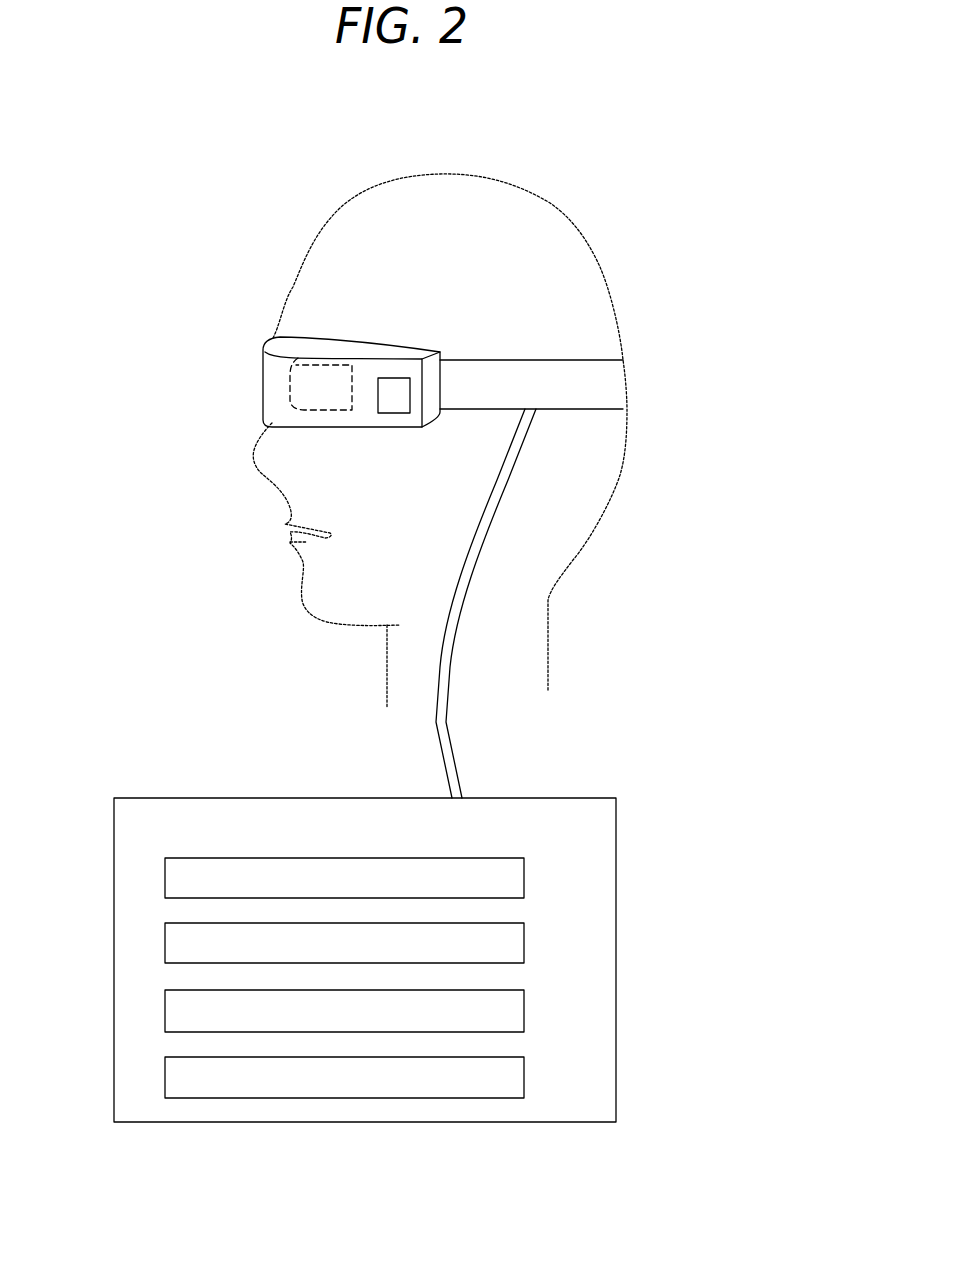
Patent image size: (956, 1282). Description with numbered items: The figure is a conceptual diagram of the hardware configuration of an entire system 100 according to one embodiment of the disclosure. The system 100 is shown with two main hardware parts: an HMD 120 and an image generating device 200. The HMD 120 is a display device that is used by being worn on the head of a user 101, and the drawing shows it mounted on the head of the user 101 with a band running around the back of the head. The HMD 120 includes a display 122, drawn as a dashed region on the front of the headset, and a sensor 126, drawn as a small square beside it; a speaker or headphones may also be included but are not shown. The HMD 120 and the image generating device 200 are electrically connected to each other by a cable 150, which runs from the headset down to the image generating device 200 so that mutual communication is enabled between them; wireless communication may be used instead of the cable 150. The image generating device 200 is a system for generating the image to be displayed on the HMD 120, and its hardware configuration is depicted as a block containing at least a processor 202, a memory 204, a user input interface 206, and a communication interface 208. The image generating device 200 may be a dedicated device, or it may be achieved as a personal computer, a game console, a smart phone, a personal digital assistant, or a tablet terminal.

The system 100 is at (94, 250).
The user 101 is at (605, 268).
The HMD 120 is at (280, 342).
The display 122 is at (290, 383).
The sensor 126 is at (378, 406).
The cable 150 is at (510, 482).
The image generating device 200 is at (540, 798).
The processor 202 is at (524, 873).
The memory 204 is at (524, 942).
The user input interface 206 is at (524, 1011).
The communication interface 208 is at (524, 1077).